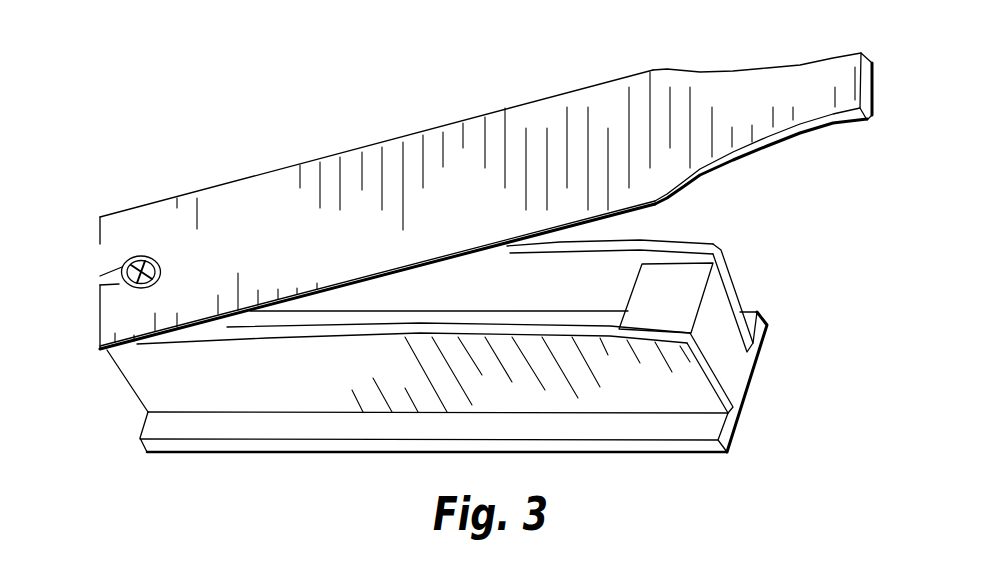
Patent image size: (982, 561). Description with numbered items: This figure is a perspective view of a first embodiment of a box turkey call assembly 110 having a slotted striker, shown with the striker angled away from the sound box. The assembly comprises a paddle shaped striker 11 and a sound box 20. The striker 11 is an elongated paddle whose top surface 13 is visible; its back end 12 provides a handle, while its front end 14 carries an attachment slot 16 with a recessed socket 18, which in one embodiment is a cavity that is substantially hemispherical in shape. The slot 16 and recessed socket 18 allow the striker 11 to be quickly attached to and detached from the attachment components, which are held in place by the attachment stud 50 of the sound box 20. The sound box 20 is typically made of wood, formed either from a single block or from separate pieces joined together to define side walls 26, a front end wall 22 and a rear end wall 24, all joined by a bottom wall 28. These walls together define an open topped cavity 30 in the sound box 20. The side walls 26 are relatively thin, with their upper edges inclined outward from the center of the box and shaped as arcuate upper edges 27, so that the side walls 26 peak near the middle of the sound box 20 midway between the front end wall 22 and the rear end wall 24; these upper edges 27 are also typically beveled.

The box turkey call assembly 110 is at (170, 116).
The paddle shaped striker 11 is at (320, 124).
The back end of the striker 12 is at (753, 89).
The top surface of the striker 13 is at (428, 177).
The open topped cavity 30 is at (472, 285).
The front end of the striker 14 is at (113, 230).
The attachment slot 16 is at (100, 283).
The recessed socket 18 is at (131, 260).
The attachment stud 50 is at (153, 257).
The sound box 20 is at (736, 213).
The front end wall 22 is at (123, 377).
The rear end wall 24 is at (722, 311).
The side walls 26 is at (328, 376).
The arcuate upper edges 27 is at (668, 246).
The bottom wall 28 is at (230, 445).